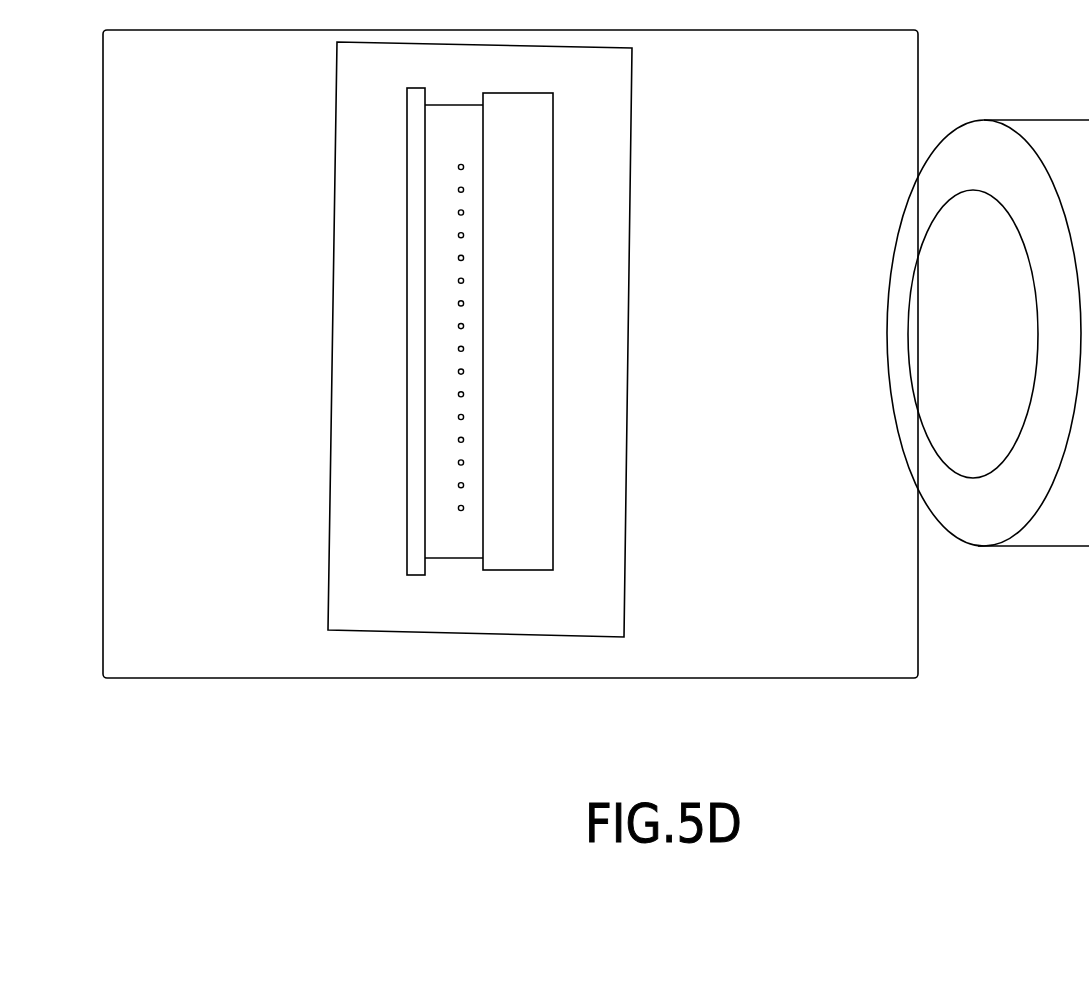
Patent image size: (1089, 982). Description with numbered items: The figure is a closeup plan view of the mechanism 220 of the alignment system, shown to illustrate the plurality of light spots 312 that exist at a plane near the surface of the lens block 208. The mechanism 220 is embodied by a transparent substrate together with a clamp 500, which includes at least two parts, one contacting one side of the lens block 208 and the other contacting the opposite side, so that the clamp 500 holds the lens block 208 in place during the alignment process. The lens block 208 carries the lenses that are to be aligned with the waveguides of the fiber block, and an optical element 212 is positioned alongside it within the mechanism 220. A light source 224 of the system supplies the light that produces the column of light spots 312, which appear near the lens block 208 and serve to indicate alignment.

The lens block 208 is at (442, 552).
The optical element 212 is at (624, 553).
The mechanism 220 is at (838, 595).
The light source 224 is at (1007, 418).
The light spots 312 is at (463, 510).
The clamp 500 is at (425, 97).